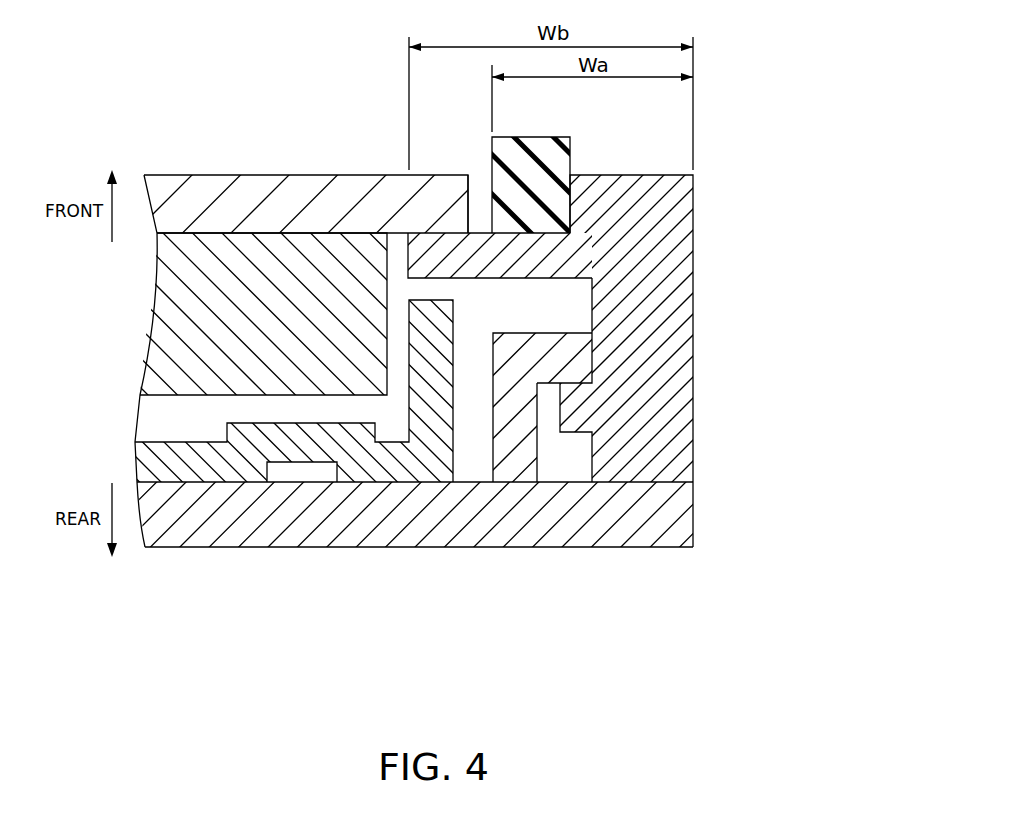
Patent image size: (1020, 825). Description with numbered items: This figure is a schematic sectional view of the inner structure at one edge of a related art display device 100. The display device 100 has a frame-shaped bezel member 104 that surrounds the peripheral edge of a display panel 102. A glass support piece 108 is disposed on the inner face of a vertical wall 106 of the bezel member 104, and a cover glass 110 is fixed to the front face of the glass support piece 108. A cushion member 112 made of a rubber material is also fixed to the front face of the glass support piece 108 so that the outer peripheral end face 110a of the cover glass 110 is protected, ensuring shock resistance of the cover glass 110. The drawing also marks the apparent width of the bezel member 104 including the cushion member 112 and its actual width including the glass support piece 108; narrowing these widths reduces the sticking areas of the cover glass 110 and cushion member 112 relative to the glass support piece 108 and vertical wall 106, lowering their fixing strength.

The display device 100 is at (93, 100).
The display panel 102 is at (178, 323).
The bezel member 104 is at (770, 245).
The vertical wall 106 is at (667, 260).
The glass support piece 108 is at (517, 265).
The cover glass 110 is at (295, 195).
The outer peripheral end face 110a is at (478, 203).
The cushion member 112 is at (535, 150).